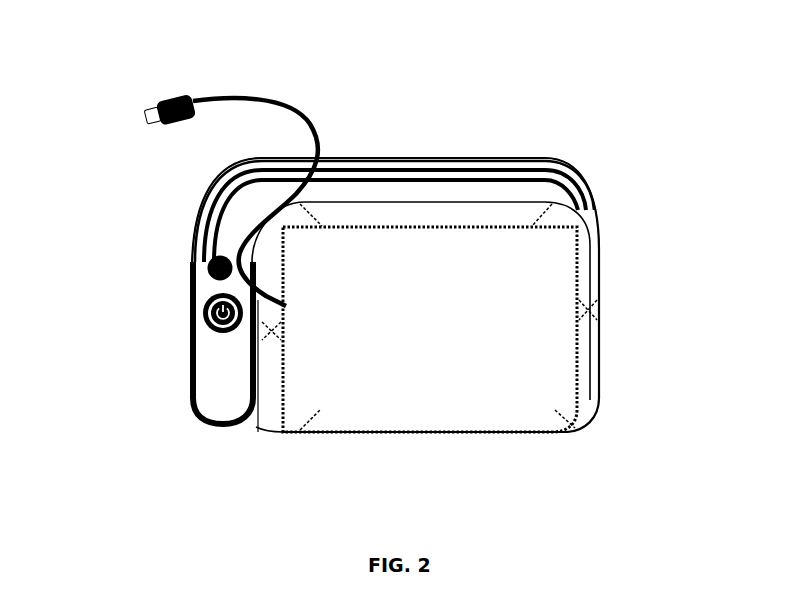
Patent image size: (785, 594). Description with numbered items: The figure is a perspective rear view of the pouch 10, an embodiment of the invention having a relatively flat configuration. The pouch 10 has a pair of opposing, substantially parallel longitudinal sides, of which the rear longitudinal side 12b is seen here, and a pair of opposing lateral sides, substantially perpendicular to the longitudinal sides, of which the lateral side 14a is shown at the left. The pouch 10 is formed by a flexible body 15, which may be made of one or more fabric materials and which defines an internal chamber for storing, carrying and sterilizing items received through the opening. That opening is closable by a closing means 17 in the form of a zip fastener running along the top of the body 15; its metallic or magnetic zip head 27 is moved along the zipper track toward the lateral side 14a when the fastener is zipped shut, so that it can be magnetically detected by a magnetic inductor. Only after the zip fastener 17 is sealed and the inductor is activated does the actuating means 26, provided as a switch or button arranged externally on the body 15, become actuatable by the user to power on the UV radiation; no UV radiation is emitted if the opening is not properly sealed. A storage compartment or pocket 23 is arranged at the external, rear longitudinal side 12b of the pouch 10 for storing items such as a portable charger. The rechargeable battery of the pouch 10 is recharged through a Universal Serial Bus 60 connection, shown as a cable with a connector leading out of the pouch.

The pouch 10 is at (616, 127).
The longitudinal side 12b is at (268, 412).
The lateral side 14a is at (227, 377).
The flexible body 15 is at (590, 367).
The closing means 17 is at (455, 165).
The pocket 23 is at (472, 342).
The actuating means 26 is at (197, 311).
The zip head 27 is at (209, 263).
The Universal Serial Bus 60 is at (143, 113).